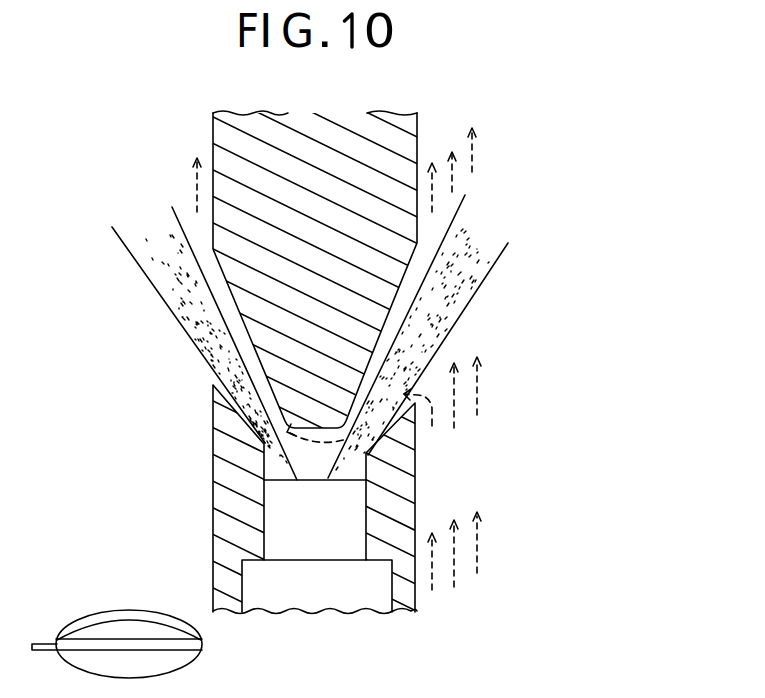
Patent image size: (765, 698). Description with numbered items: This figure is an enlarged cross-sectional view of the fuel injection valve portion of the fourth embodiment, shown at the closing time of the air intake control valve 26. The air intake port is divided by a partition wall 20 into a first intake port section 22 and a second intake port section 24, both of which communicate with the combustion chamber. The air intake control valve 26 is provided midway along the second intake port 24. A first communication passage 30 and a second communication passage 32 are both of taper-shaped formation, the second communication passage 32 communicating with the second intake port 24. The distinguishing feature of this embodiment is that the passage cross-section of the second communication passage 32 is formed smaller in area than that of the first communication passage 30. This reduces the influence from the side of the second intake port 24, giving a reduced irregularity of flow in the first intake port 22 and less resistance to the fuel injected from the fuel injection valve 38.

The partition wall 20 is at (357, 175).
The first intake port section 22 is at (477, 300).
The second intake port section 24 is at (157, 307).
The air intake control valve 26 is at (115, 627).
The first communication passage 30 is at (380, 432).
The second communication passage 32 is at (215, 380).
The fuel injection valve 38 is at (333, 543).